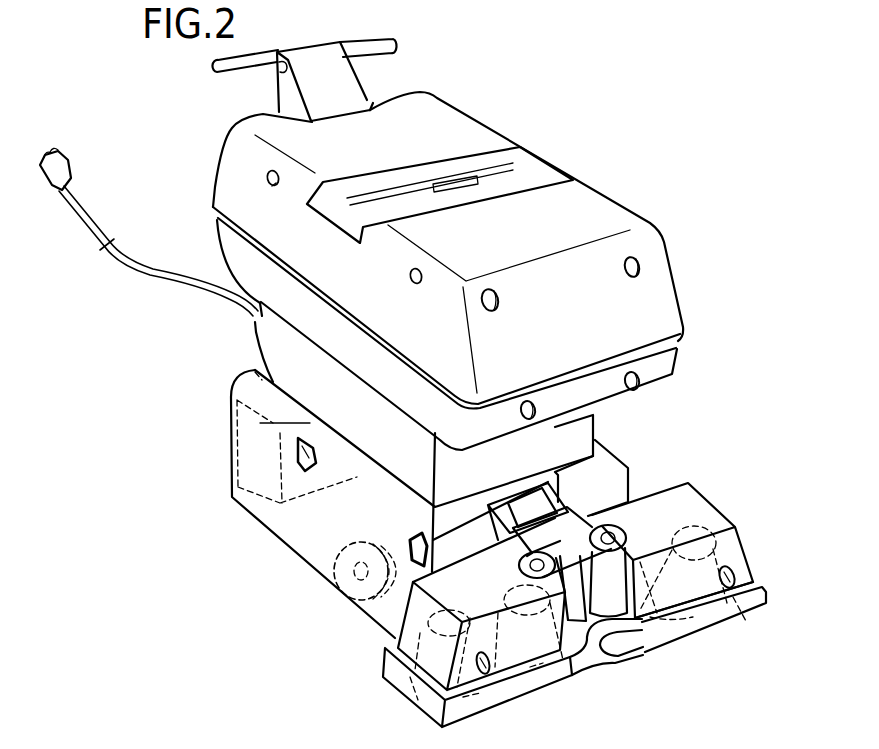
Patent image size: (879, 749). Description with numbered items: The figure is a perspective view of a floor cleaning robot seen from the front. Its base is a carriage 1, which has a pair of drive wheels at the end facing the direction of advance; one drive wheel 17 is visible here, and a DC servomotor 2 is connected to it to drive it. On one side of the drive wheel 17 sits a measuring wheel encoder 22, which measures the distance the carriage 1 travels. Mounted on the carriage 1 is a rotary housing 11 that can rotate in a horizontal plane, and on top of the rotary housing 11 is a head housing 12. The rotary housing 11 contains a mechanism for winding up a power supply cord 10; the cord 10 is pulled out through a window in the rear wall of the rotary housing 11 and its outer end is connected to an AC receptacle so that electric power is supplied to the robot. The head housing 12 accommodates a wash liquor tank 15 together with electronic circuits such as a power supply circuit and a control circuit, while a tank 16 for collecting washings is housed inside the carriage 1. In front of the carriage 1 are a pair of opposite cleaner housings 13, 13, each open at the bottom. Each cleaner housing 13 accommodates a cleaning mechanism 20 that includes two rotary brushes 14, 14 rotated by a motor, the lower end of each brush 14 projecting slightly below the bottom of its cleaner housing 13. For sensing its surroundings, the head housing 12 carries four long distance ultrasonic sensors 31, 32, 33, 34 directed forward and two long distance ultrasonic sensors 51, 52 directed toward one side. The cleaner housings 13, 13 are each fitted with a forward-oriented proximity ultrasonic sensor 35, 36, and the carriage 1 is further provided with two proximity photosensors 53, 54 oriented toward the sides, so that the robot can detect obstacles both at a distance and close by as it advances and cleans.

The carriage 1 is at (267, 513).
The DC servomotor 2 is at (423, 540).
The power supply cord 10 is at (173, 270).
The rotary housing 11 is at (265, 333).
The head housing 12 is at (607, 217).
The cleaner housing 13 is at (532, 683).
The rotary brush 14 is at (413, 703).
The wash liquor tank 15 is at (508, 180).
The tank for collecting washings 16 is at (232, 499).
The drive wheel 17 is at (332, 572).
The cleaning mechanism 20 is at (728, 500).
The measuring wheel encoder 22 is at (374, 621).
The long distance ultrasonic sensor 31 is at (500, 305).
The long distance ultrasonic sensor 32 is at (645, 266).
The long distance ultrasonic sensor 33 is at (534, 400).
The long distance ultrasonic sensor 34 is at (645, 381).
The proximity ultrasonic sensor 35 is at (488, 668).
The proximity ultrasonic sensor 36 is at (733, 570).
The long distance ultrasonic sensor 51 is at (417, 284).
The long distance ultrasonic sensor 52 is at (273, 186).
The proximity photosensor 53 is at (476, 422).
The proximity photosensor 54 is at (298, 452).